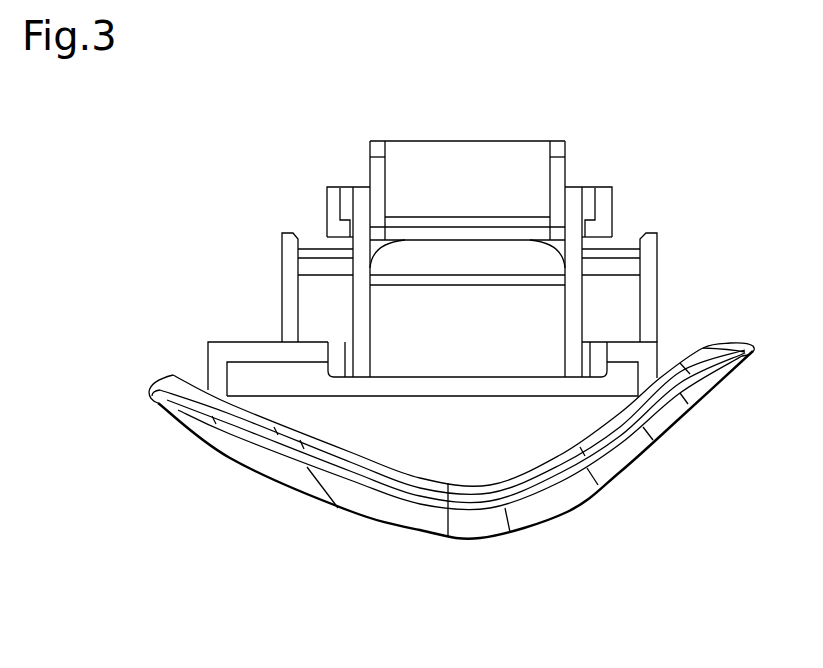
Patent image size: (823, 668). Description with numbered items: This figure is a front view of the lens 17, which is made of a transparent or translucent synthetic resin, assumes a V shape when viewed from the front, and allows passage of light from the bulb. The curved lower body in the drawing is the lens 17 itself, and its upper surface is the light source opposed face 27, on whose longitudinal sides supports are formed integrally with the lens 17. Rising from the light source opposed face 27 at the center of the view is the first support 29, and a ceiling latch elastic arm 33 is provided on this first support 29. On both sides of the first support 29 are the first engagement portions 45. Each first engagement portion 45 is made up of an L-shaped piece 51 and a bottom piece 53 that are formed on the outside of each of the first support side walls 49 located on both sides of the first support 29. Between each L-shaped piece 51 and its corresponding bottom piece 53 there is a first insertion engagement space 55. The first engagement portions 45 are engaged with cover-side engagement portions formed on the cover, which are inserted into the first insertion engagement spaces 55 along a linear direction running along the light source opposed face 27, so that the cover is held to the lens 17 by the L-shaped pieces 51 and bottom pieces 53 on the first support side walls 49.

The lens 17 is at (262, 97).
The light source opposed face 27 is at (468, 484).
The first support 29 is at (256, 316).
The ceiling latch elastic arm 33 is at (502, 243).
The first engagement portions 45 is at (294, 202).
The first support side walls 49 is at (411, 222).
The L-shaped piece 51 is at (325, 206).
The bottom piece 53 is at (324, 269).
The first insertion engagement spaces 55 is at (323, 249).